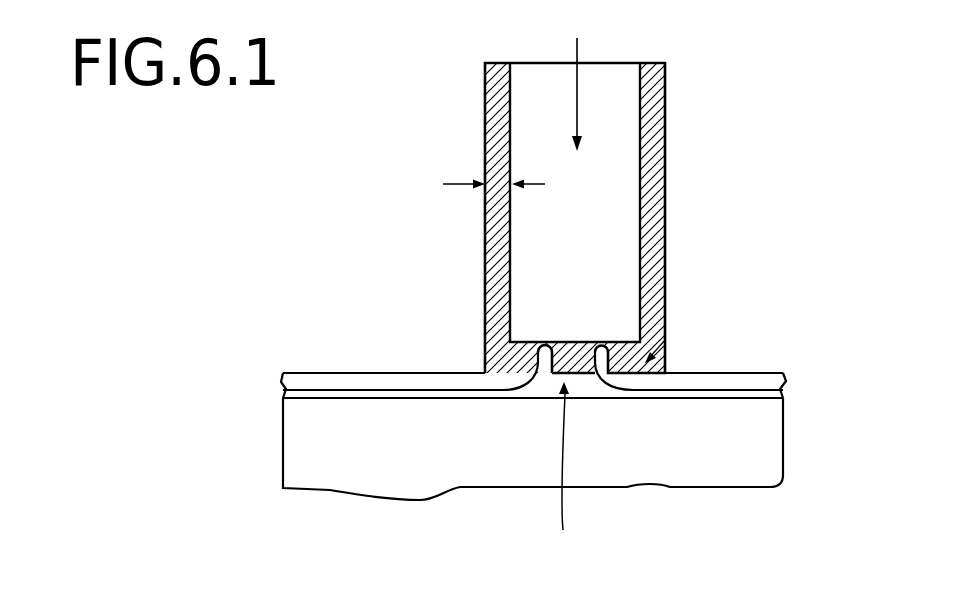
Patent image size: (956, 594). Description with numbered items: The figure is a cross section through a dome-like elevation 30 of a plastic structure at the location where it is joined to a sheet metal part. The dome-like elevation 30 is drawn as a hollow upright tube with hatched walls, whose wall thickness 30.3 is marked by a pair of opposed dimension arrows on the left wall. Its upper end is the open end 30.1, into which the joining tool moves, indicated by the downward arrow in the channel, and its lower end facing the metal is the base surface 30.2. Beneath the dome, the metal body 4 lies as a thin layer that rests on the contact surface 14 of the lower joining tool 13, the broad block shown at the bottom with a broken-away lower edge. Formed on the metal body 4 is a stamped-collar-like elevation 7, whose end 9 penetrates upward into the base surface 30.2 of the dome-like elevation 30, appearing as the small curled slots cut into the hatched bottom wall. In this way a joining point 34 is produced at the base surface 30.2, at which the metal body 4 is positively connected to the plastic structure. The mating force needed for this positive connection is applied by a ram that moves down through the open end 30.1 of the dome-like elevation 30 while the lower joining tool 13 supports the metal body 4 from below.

The dome-like elevation 30 is at (655, 185).
The open end 30.1 is at (613, 100).
The base surface 30.2 is at (572, 353).
The wall thickness 30.3 is at (493, 190).
The joining point 34 is at (665, 340).
The end of the stamped-collar-like elevation 9 is at (543, 345).
The stamped-collar-like elevation 7 is at (562, 470).
The metal body 4 is at (398, 378).
The contact surface 14 is at (317, 395).
The lower joining tool 13 is at (528, 457).